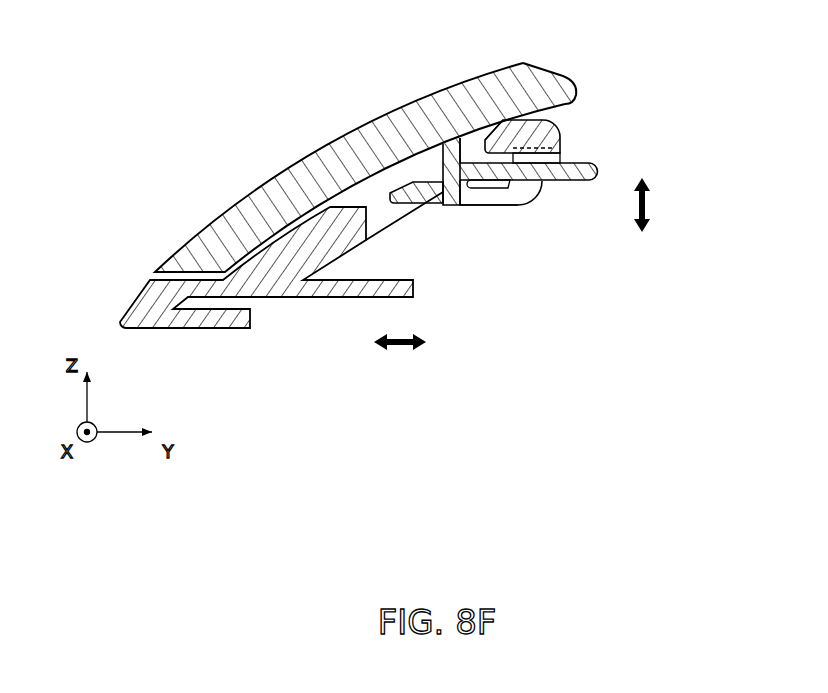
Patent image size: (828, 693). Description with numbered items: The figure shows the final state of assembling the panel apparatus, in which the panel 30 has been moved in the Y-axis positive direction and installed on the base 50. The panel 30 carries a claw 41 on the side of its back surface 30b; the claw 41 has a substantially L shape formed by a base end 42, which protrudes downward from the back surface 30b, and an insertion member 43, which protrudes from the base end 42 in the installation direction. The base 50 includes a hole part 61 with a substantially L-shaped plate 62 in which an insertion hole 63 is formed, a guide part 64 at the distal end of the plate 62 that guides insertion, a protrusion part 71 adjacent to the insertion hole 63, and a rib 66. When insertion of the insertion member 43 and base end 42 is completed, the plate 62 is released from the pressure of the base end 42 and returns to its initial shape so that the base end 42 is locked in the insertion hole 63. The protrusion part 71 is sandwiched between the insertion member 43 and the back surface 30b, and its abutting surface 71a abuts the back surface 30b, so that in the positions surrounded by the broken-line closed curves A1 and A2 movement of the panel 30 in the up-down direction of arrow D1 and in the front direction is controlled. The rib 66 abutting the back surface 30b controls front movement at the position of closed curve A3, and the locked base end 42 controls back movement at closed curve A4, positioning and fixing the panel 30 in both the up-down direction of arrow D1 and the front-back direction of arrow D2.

The panel 30 is at (222, 207).
The back surface 30b is at (571, 109).
The claw 41 is at (470, 146).
The base end 42 is at (462, 206).
The insertion member 43 is at (592, 181).
The base 50 is at (342, 298).
The hole part 61 is at (497, 209).
The plate 62 is at (518, 206).
The insertion hole 63 is at (530, 198).
The guide part 64 is at (406, 204).
The rib 66 is at (333, 250).
The protrusion part 71 is at (560, 132).
The abutting surface 71a is at (478, 137).
The closed curve A1 is at (537, 68).
The closed curve A2 is at (567, 155).
The closed curve A3 is at (292, 215).
The closed curve A4 is at (440, 180).
The arrow D1 is at (648, 202).
The arrow D2 is at (403, 346).